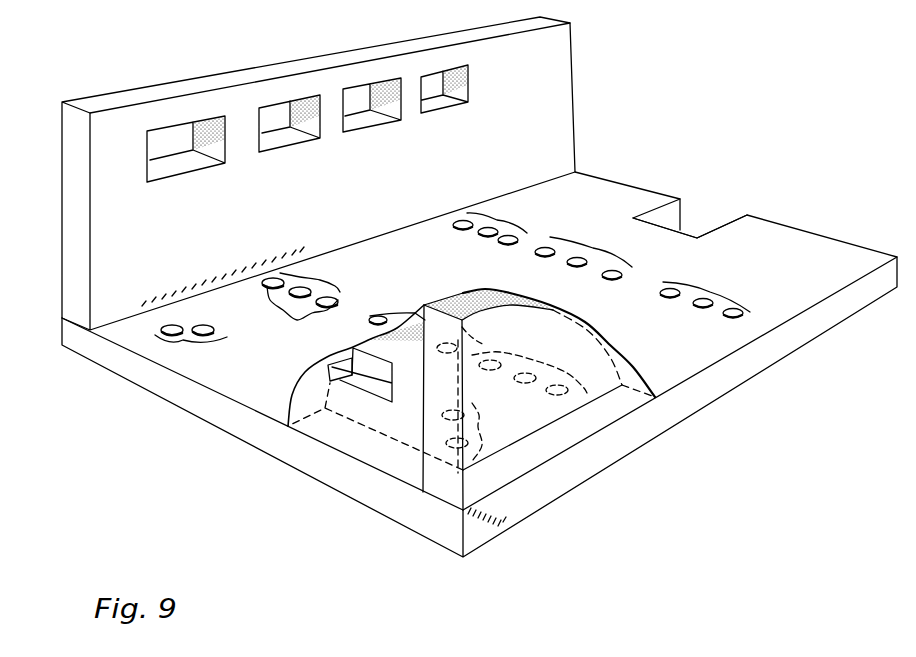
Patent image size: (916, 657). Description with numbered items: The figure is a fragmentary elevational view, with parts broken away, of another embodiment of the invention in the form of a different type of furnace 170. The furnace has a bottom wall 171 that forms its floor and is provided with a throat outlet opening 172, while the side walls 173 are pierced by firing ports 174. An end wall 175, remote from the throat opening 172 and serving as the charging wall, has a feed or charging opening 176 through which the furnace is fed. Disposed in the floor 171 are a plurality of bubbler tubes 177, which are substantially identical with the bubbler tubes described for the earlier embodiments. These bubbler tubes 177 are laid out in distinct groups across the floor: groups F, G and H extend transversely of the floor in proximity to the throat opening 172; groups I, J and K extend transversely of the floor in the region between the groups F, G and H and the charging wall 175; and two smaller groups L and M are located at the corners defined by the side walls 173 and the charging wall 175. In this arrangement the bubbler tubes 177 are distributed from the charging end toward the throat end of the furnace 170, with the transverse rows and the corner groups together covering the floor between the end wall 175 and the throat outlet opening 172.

The furnace 170 is at (598, 167).
The bottom wall 171 is at (783, 241).
The throat outlet opening 172 is at (673, 213).
The side walls 173 is at (560, 68).
The firing ports 174 is at (177, 131).
The end wall 175 is at (365, 443).
The feed or charging opening 176 is at (348, 371).
The bubbler tubes 177 is at (173, 327).
The bubbler tube group F is at (490, 222).
The bubbler tube group G is at (583, 252).
The bubbler tube group H is at (705, 291).
The bubbler tube group I is at (301, 289).
The bubbler tube group J is at (424, 306).
The bubbler tube group K is at (512, 365).
The bubbler tube group L is at (191, 347).
The bubbler tube group M is at (475, 431).